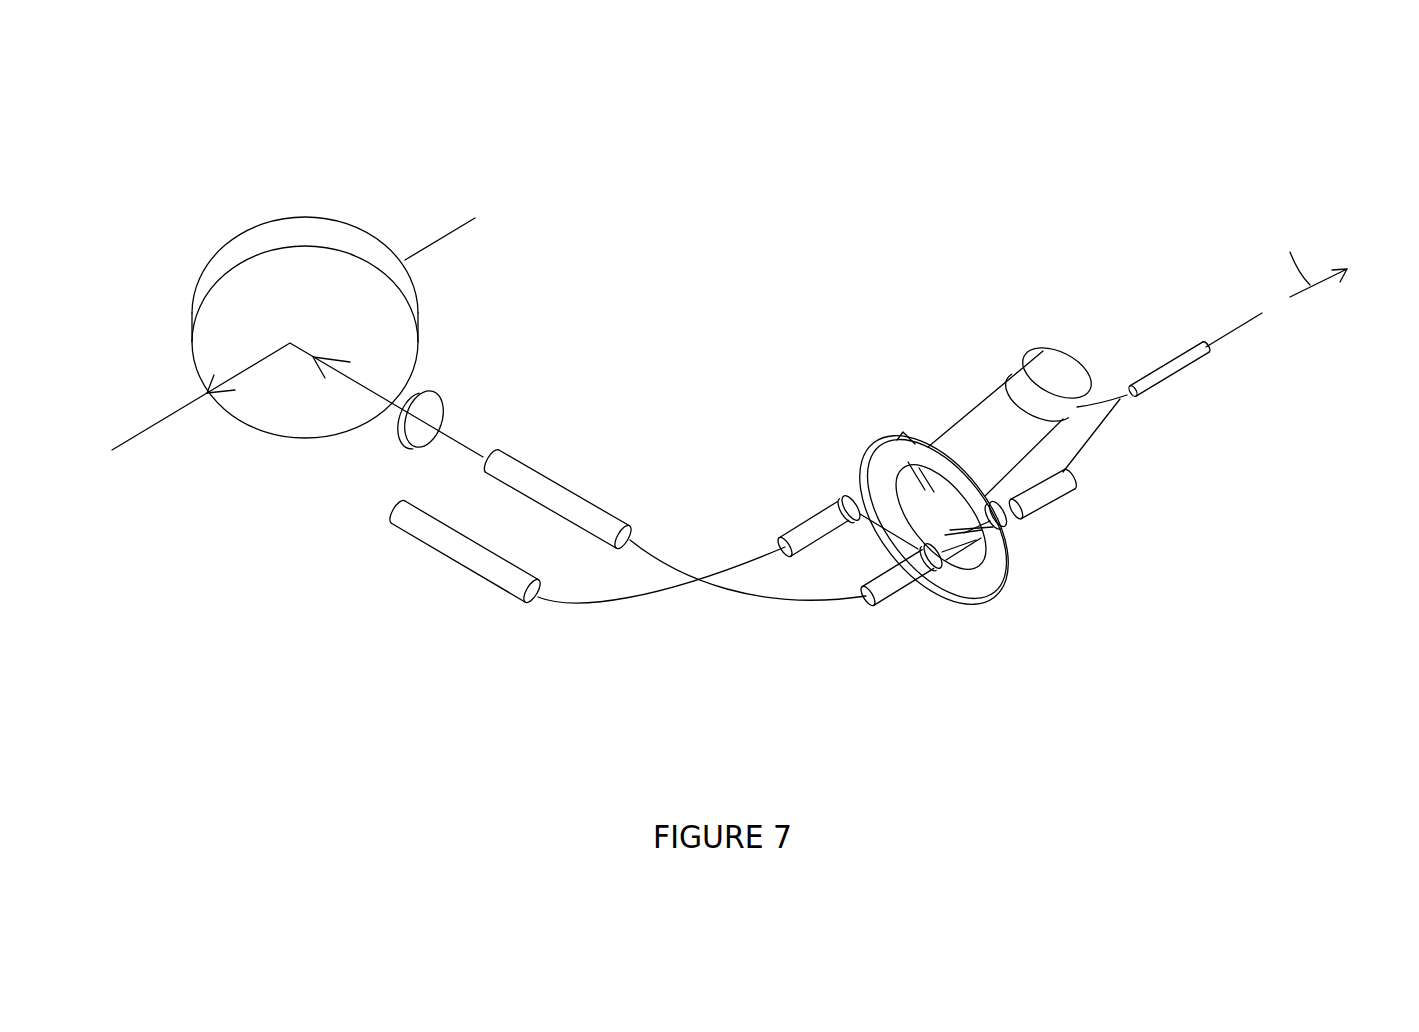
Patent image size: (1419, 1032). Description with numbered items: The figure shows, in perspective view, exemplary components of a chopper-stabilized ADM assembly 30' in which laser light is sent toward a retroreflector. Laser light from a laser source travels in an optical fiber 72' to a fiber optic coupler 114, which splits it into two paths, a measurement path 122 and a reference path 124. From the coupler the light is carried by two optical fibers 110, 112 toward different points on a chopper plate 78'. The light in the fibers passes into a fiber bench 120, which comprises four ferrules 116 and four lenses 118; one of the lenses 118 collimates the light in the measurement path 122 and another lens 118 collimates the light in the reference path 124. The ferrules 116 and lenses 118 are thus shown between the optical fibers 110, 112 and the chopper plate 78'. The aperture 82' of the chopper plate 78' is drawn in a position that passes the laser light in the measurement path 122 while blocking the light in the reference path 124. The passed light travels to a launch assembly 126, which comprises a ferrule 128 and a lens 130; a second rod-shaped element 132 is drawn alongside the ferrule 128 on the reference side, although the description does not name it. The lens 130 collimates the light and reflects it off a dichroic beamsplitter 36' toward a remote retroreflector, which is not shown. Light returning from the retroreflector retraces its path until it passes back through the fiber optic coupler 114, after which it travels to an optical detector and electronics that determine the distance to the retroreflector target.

The dichroic beamsplitter 36' is at (293, 287).
The chopper-stabilized ADM assembly 30' is at (933, 205).
The launch assembly 126 is at (675, 330).
The lens 130 is at (435, 392).
The ferrule 128 is at (517, 457).
The collimator 132 is at (443, 553).
The measurement path 122 is at (582, 460).
The reference path 124 is at (497, 628).
The optical fiber 110 is at (1100, 397).
The optical fiber 112 is at (1097, 440).
The fiber optic coupler 114 is at (1163, 367).
The optical fiber 72' is at (1300, 301).
The ferrule 116 is at (967, 430).
The lens 118 is at (1013, 528).
The aperture 82' is at (957, 520).
The chopper plate 78' is at (1013, 597).
The fiber bench 120 is at (1125, 593).